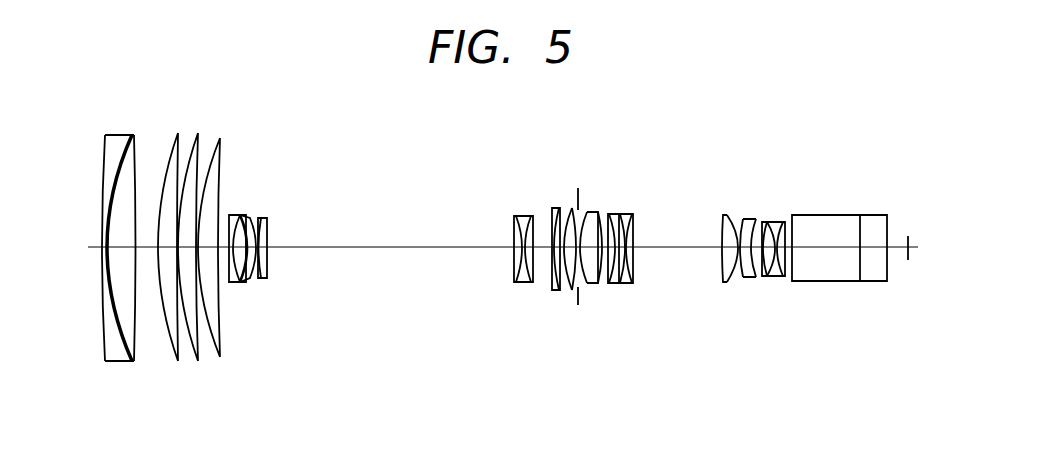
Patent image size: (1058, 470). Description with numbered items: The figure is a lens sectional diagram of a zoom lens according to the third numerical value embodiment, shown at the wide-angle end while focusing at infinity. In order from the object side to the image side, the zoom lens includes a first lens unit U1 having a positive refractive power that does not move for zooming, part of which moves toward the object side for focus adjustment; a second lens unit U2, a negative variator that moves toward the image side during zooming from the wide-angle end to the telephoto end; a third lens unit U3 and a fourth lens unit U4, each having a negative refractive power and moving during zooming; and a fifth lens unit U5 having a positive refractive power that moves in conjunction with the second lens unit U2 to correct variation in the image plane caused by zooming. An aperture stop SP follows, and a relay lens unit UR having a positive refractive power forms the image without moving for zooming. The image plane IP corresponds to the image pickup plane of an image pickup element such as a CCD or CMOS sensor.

The first lens unit U1 is at (94, 123).
The second lens unit U2 is at (224, 203).
The third lens unit U3 is at (263, 216).
The fourth lens unit U4 is at (508, 203).
The fifth lens unit U5 is at (550, 203).
The aperture stop SP is at (578, 188).
The relay lens unit UR is at (787, 200).
The image plane IP is at (908, 236).